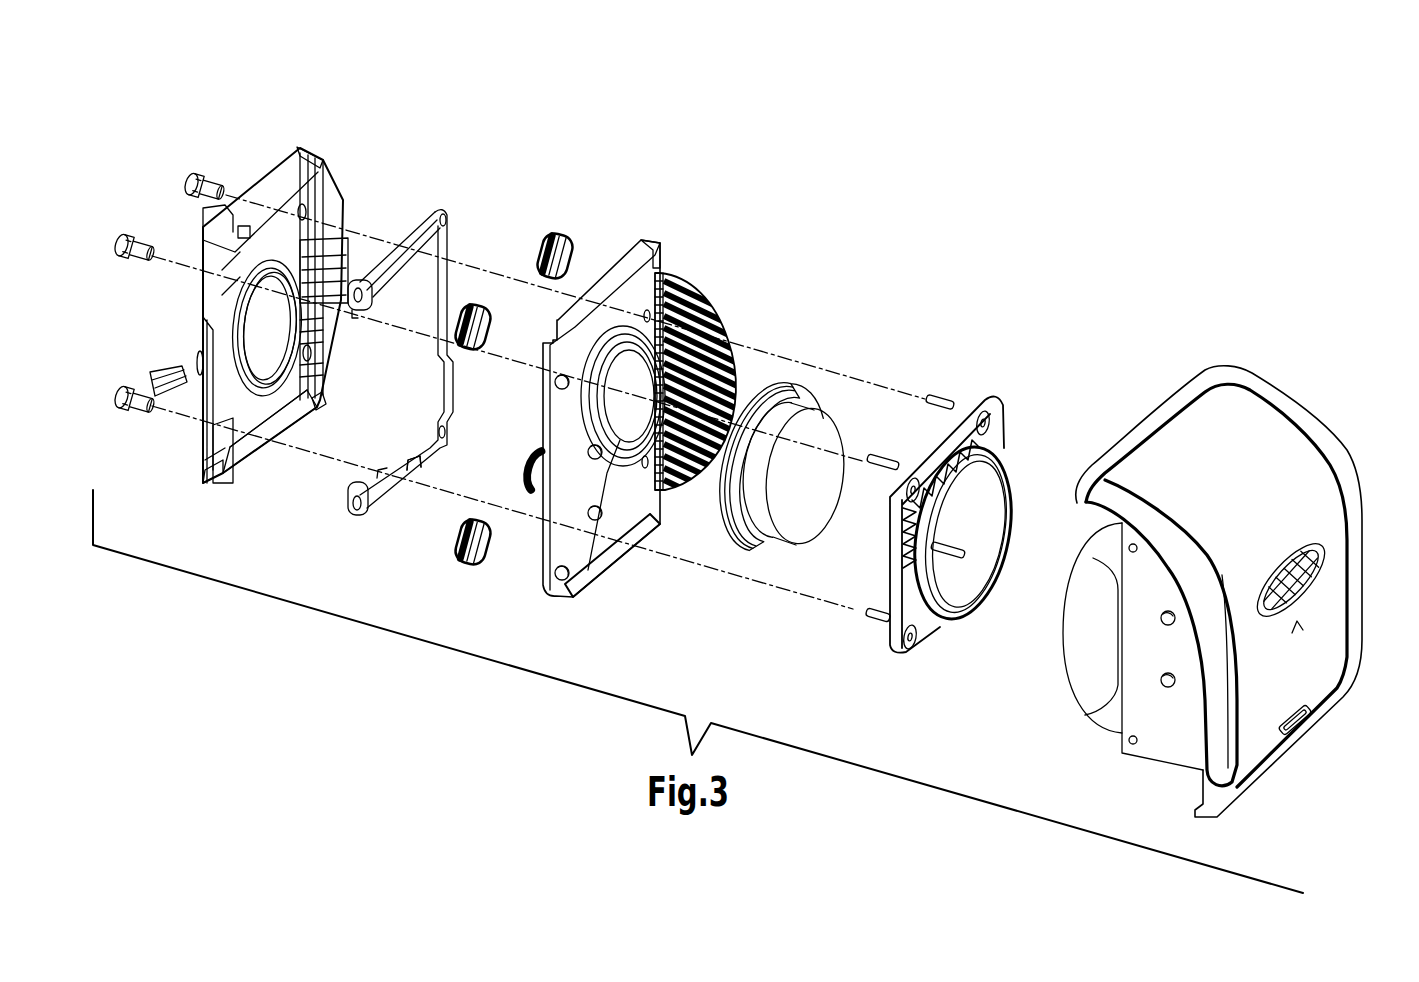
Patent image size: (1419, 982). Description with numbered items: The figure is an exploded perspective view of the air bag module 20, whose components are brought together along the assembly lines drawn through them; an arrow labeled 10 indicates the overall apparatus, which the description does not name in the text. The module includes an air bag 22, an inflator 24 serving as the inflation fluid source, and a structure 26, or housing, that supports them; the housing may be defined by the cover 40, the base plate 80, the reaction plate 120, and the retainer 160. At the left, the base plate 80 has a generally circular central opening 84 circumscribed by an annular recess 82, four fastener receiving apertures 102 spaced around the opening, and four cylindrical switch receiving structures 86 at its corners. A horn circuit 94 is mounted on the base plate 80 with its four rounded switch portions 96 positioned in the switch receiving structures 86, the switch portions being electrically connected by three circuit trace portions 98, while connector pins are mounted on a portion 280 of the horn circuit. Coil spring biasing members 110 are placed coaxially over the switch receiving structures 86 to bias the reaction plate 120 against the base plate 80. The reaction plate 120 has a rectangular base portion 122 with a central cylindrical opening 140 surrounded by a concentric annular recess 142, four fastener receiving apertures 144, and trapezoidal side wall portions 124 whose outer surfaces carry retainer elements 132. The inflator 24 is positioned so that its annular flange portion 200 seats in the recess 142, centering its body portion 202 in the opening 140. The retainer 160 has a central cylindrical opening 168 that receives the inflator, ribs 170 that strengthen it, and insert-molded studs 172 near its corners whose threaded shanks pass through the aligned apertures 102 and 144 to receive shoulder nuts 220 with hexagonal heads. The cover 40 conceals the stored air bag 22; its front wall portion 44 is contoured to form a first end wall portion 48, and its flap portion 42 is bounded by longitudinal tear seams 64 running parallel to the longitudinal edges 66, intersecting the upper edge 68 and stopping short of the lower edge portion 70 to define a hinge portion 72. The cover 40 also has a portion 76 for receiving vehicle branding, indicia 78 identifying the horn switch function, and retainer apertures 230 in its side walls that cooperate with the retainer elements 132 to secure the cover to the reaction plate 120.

The lamp assembly 10 is at (1116, 215).
The air bag module 20 is at (1018, 229).
The structure (housing) 26 is at (1168, 268).
The air bag 22 is at (1090, 674).
The inflation fluid source (inflator) 24 is at (798, 529).
The cover 40 is at (1217, 564).
The flap portion 42 is at (1328, 677).
The front wall portion 44 is at (1328, 606).
The first end wall portion 48 is at (1224, 410).
The longitudinal tear seams 64 is at (1325, 453).
The longitudinal edges 66 is at (1361, 482).
The upper edge 68 is at (1160, 403).
The lower edge portion 70 is at (1308, 740).
The hinge portion 72 is at (1271, 768).
The portion for receiving vehicle branding 76 is at (1302, 545).
The indicia 78 is at (1303, 708).
The base plate 80 is at (260, 325).
The annular recess 82 is at (255, 271).
The central opening 84 is at (270, 442).
The switch receiving structures 86 is at (243, 236).
The horn circuit 94 is at (425, 356).
The switch portions 96 is at (447, 219).
The circuit trace portions 98 is at (412, 236).
The fastener receiving apertures 102 is at (300, 211).
The spring biasing members 110 is at (483, 306).
The reaction plate 120 is at (631, 420).
The base portion 122 is at (622, 542).
The side wall portions 124 is at (722, 336).
The retainer elements 132 is at (562, 384).
The central cylindrical opening 140 is at (736, 393).
The concentric annular recess 142 is at (648, 256).
The fastener receiving apertures 144 is at (690, 288).
The retainer 160 is at (951, 514).
The central cylindrical opening 168 is at (948, 568).
The ribs 170 is at (932, 432).
The studs 172 is at (992, 415).
The annular flange portion 200 is at (793, 390).
The body portion 202 is at (824, 437).
The shoulder nuts 220 is at (200, 176).
The retainer apertures 230 is at (1168, 612).
The portion of the horn circuit 280 is at (422, 474).